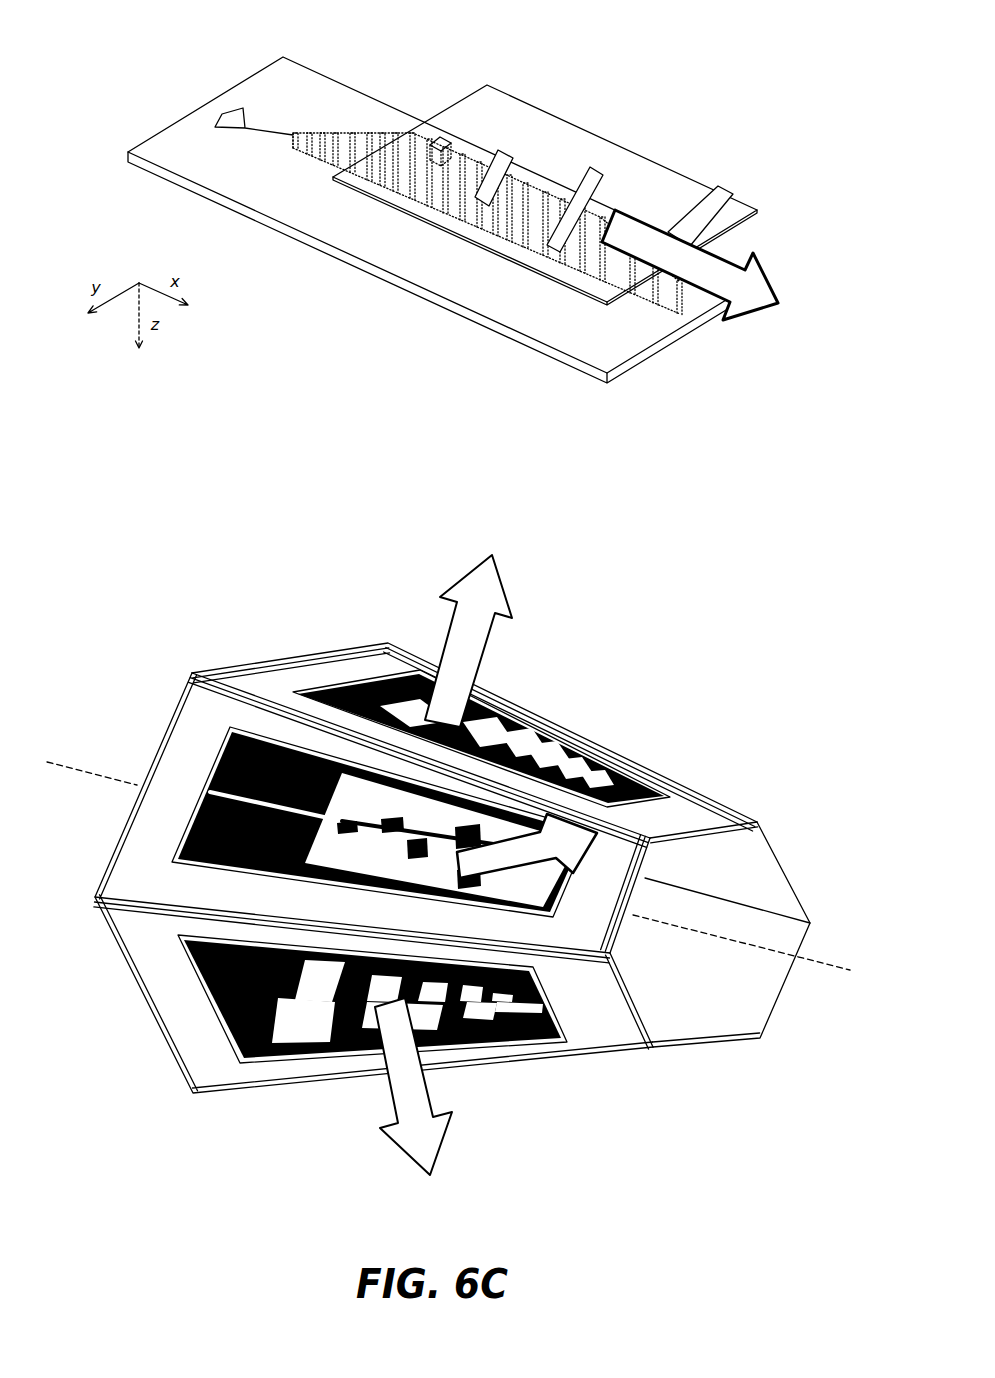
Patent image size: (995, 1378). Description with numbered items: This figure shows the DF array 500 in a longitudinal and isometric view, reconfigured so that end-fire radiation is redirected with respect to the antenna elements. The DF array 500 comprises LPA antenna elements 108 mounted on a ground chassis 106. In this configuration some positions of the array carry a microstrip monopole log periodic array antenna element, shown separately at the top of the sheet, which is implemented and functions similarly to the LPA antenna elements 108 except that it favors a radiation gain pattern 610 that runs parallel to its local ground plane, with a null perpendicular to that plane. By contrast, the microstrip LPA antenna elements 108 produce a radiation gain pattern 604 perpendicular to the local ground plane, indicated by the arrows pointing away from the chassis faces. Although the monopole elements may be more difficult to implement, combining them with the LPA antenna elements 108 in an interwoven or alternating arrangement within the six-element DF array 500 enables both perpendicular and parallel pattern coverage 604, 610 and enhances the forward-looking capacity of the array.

The DF array 500 is at (448, 630).
The ground chassis 106 is at (620, 1020).
The LPA antenna element 108 is at (380, 680).
The radiation gain pattern 604 is at (477, 588).
The radiation gain pattern 610 is at (560, 838).